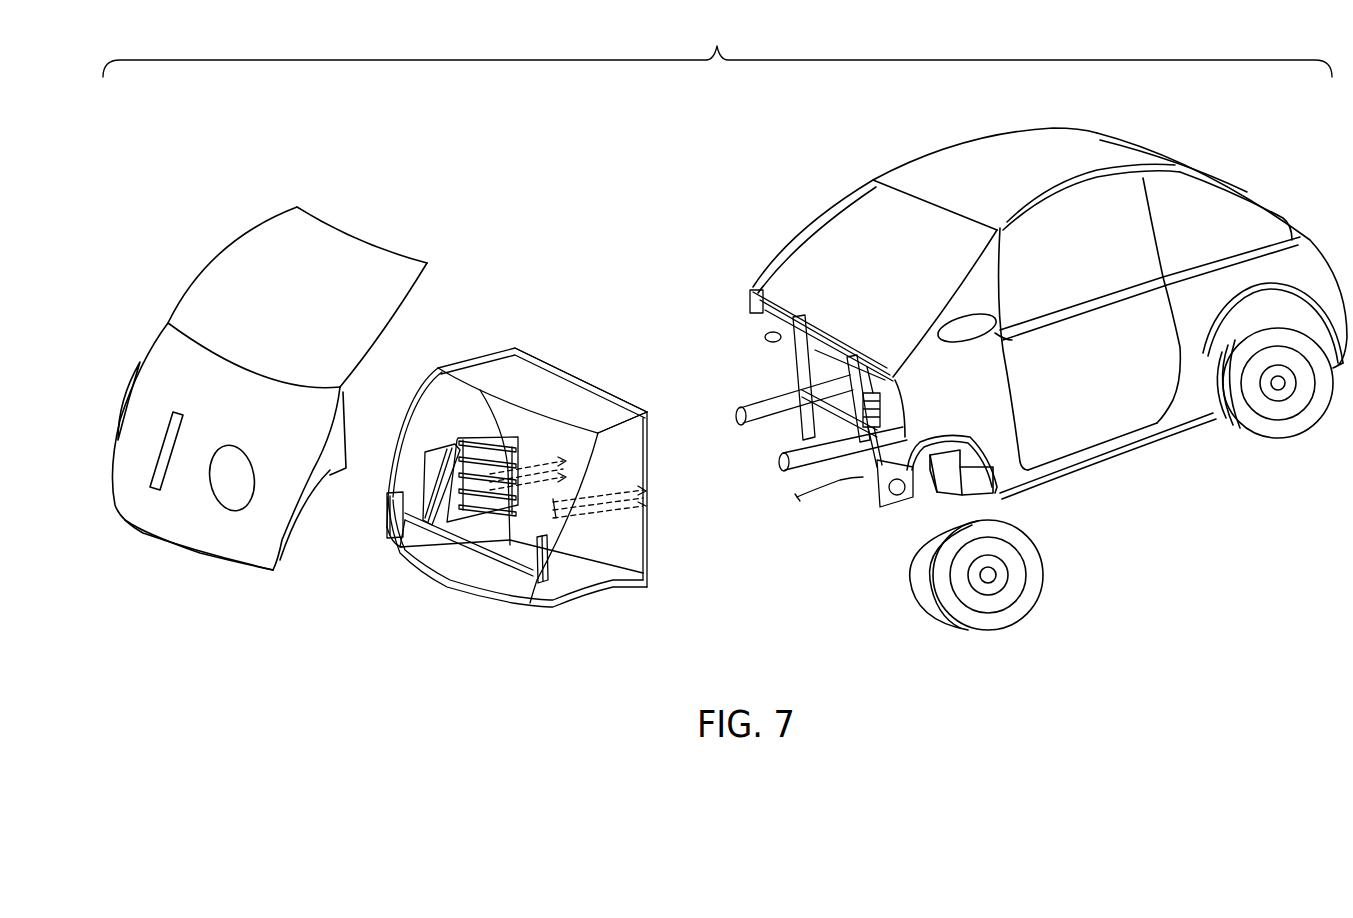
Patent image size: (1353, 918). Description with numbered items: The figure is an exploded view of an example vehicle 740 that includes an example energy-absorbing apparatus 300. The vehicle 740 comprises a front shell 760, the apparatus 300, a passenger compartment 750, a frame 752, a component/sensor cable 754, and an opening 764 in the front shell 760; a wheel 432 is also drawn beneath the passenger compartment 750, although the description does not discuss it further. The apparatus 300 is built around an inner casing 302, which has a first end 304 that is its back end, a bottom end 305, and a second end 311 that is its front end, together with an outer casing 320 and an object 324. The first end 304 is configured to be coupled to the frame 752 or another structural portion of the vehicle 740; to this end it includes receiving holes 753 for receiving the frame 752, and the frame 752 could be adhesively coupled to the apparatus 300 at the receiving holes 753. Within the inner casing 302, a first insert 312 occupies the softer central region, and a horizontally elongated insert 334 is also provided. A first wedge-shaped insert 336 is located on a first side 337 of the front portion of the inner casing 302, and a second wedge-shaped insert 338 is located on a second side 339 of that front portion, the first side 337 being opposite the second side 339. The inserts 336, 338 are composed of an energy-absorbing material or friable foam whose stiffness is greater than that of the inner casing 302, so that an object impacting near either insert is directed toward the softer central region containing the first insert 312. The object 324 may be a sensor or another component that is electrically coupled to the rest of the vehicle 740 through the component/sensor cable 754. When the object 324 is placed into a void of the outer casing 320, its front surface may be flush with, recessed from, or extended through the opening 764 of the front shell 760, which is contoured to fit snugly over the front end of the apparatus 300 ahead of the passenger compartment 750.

The vehicle 740 is at (717, 43).
The passenger compartment 750 is at (1036, 353).
The front shell 760 is at (269, 343).
The opening 764 is at (179, 410).
The energy-absorbing apparatus 300 is at (512, 463).
The inner casing 302 is at (613, 395).
The first end 304 is at (660, 378).
The bottom end 305 is at (403, 590).
The second end 311 is at (396, 428).
The first insert 312 is at (510, 433).
The outer casing 320 is at (563, 367).
The object 324 is at (445, 447).
The horizontally elongated insert 334 is at (452, 548).
The first wedge-shaped insert 336 is at (387, 517).
The first side 337 is at (380, 508).
The second wedge-shaped insert 338 is at (537, 590).
The second side 339 is at (597, 613).
The receiving holes 753 is at (537, 472).
The frame 752 is at (753, 427).
The component/sensor cable 754 is at (822, 500).
The front wheel 432 is at (1037, 595).